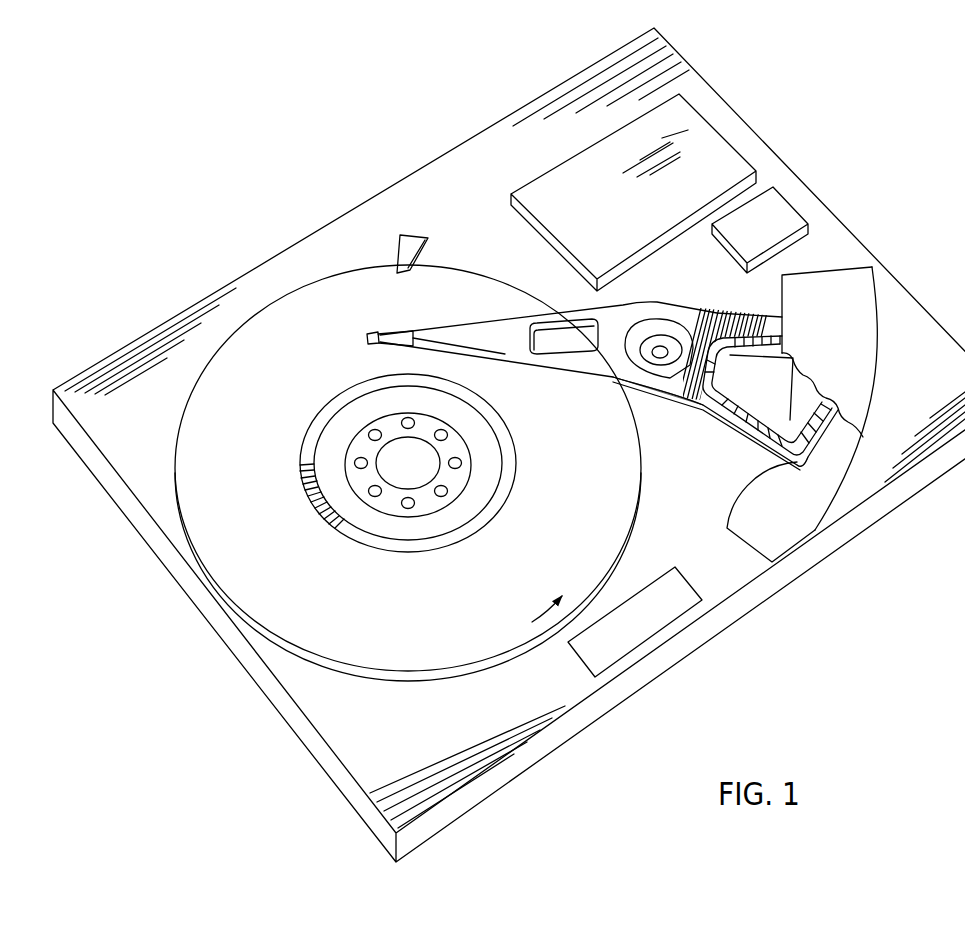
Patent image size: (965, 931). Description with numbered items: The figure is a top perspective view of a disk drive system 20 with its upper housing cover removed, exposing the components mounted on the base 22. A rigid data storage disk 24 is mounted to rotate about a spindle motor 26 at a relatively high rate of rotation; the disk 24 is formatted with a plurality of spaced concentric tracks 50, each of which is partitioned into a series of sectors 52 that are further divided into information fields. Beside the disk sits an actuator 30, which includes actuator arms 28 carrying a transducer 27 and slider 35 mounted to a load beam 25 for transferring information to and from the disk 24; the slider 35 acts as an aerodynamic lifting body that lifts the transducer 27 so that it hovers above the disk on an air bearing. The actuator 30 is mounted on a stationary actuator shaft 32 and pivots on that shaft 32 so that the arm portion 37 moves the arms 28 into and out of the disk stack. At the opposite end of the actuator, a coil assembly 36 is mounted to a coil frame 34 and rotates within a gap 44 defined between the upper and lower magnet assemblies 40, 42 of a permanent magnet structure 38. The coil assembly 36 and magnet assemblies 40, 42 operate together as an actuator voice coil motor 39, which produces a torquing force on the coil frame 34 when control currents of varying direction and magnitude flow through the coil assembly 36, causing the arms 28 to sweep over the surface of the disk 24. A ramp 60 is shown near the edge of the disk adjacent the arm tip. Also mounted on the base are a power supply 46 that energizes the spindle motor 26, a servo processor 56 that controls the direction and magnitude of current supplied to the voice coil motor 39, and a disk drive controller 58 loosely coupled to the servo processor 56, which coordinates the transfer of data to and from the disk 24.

The disk drive system 20 is at (828, 145).
The base 22 is at (692, 637).
The data storage disk 24 is at (408, 473).
The load beam 25 is at (388, 338).
The spindle motor 26 is at (427, 488).
The transducer 27 is at (365, 347).
The actuator arm 28 is at (505, 343).
The actuator 30 is at (673, 393).
The actuator shaft 32 is at (661, 345).
The coil frame 34 is at (715, 316).
The slider 35 is at (367, 337).
The coil assembly 36 is at (735, 357).
The actuator arm portion 37 is at (653, 405).
The permanent magnet structure 38 is at (875, 298).
The actuator voice coil motor 39 is at (768, 458).
The upper magnet assembly 40 is at (863, 343).
The lower magnet assembly 42 is at (743, 532).
The gap 44 is at (845, 432).
The power supply 46 is at (633, 192).
The track 50 is at (315, 420).
The sector 52 is at (304, 491).
The servo processor 56 is at (635, 622).
The disk drive controller 58 is at (760, 230).
The load/unload ramp 60 is at (418, 233).